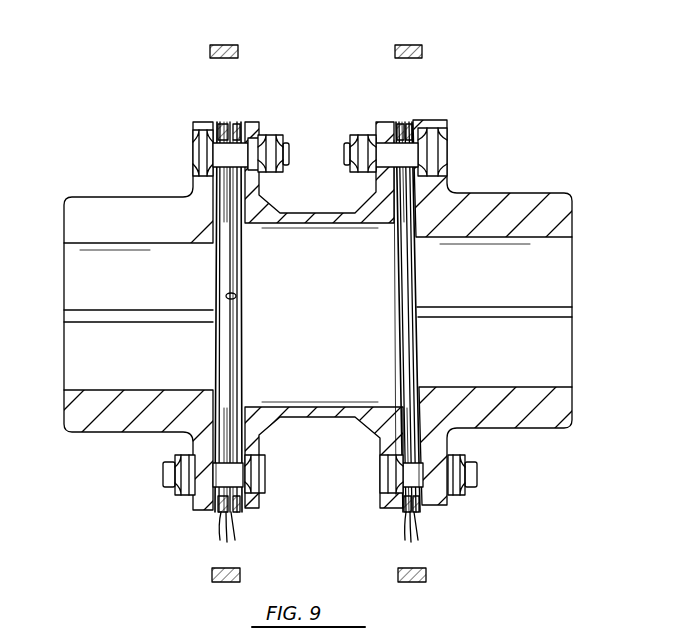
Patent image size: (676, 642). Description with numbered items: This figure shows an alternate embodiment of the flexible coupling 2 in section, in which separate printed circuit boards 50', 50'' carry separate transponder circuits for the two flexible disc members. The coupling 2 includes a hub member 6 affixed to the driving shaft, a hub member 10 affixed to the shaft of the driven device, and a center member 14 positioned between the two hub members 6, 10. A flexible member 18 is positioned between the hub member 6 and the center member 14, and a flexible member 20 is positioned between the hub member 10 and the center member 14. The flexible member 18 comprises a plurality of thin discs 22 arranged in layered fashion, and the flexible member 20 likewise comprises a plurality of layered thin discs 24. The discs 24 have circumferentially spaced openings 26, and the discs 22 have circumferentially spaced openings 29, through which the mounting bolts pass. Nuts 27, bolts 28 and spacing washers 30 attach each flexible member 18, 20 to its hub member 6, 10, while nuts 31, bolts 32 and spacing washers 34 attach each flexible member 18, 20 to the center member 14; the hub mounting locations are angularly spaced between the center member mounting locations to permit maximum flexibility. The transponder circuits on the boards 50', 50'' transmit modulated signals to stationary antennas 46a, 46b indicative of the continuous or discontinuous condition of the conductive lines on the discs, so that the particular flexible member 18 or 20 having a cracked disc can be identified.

The flexible coupling 2 is at (562, 103).
The hub member 6 is at (522, 193).
The hub member 10 is at (92, 197).
The center member 14 is at (320, 410).
The flexible member 18 is at (412, 118).
The flexible member 20 is at (228, 120).
The thin discs 22 is at (412, 516).
The thin discs 24 is at (224, 516).
The openings 26 is at (225, 170).
The nuts 27 is at (174, 492).
The bolts 28 is at (258, 488).
The openings 29 is at (405, 165).
The spacing washers 30 is at (216, 512).
The nuts 31 is at (276, 135).
The bolts 32 is at (447, 140).
The spacing washers 34 is at (220, 122).
The stationary antenna 46a is at (220, 45).
The stationary antenna 46b is at (410, 45).
The printed circuit board 50' is at (260, 288).
The printed circuit board 50'' is at (358, 317).